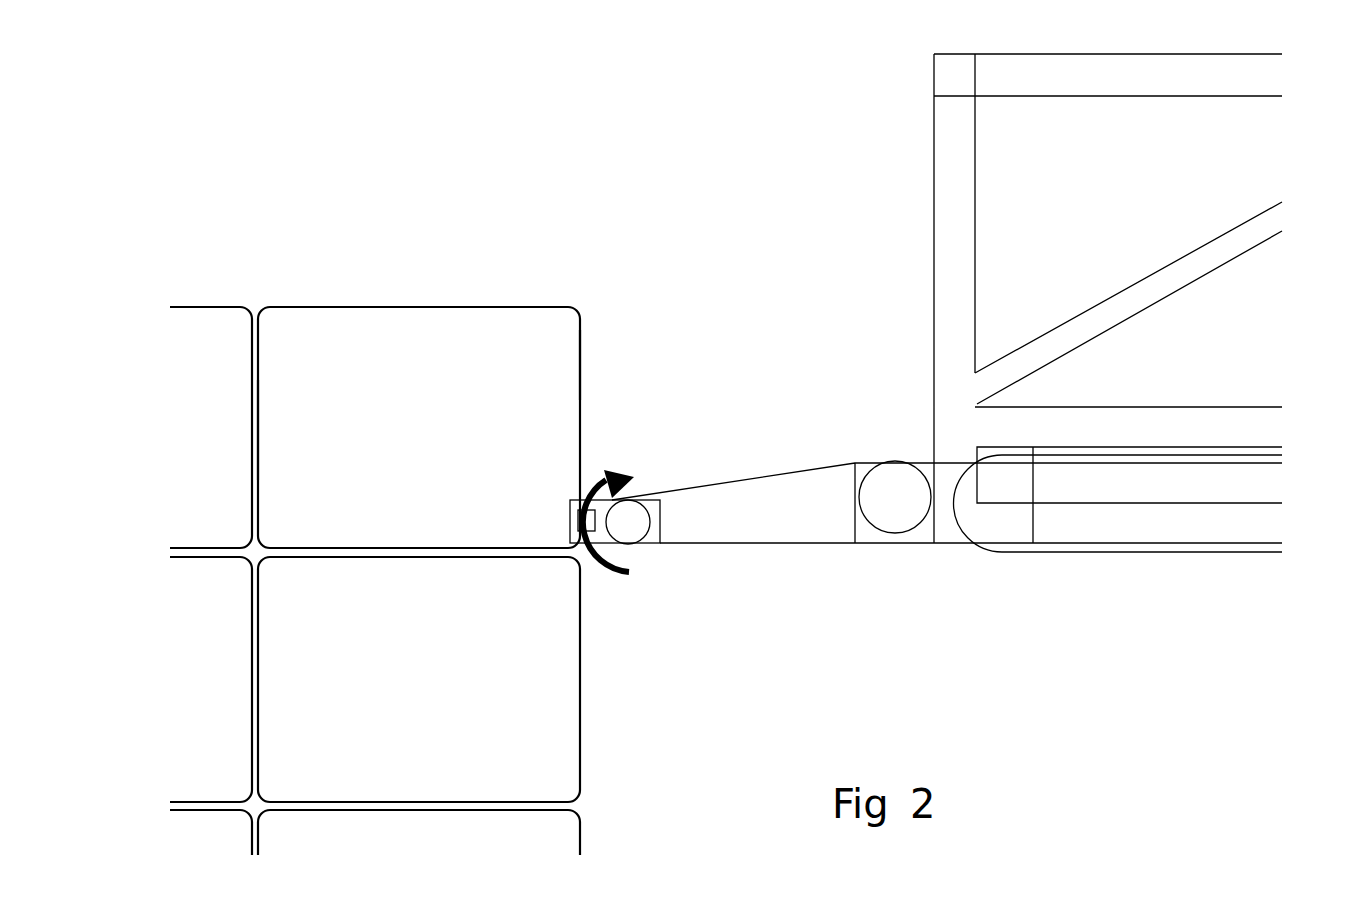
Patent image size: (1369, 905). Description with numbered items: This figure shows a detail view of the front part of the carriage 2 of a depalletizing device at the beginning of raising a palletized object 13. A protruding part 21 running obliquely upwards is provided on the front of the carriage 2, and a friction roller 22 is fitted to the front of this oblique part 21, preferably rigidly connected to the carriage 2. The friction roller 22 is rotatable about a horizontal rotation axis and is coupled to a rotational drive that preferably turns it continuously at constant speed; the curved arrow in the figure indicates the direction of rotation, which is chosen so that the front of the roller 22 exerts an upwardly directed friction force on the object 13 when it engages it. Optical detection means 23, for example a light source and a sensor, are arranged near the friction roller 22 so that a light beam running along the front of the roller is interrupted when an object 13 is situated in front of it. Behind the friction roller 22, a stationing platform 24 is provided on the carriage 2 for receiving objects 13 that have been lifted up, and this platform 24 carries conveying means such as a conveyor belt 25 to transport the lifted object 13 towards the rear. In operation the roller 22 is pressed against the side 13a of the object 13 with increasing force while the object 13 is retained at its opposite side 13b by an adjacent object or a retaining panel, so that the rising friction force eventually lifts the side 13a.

The carriage 2 is at (963, 382).
The object 13 is at (410, 335).
The side of the object 13a is at (582, 387).
The opposite side of the object 13b is at (260, 433).
The protruding part 21 is at (777, 492).
The friction roller 22 is at (628, 518).
The optical detection means 23 is at (590, 528).
The stationing platform 24 is at (1247, 404).
The conveyor belt 25 is at (1118, 456).